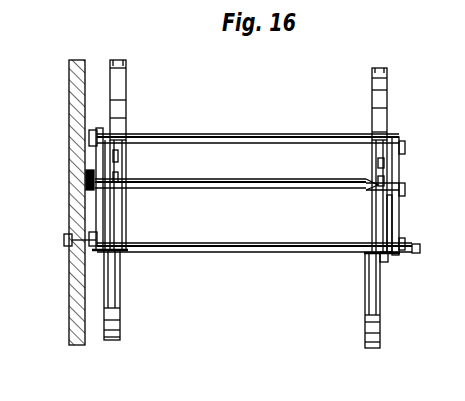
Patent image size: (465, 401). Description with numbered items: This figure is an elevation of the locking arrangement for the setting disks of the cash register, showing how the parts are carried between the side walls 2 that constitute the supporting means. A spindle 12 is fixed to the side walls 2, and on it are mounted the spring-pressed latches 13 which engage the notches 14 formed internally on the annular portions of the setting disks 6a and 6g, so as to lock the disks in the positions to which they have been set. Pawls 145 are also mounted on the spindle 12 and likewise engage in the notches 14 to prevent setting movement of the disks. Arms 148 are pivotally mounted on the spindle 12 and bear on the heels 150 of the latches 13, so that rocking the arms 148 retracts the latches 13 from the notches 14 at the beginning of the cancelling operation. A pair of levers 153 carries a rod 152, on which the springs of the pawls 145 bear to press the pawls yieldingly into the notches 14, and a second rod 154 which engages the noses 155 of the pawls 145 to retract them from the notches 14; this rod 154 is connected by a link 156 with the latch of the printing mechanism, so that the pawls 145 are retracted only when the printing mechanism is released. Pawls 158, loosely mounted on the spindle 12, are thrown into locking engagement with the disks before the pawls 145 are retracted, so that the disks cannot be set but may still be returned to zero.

The side wall 2 is at (70, 277).
The setting disk 6g is at (117, 59).
The setting disk 6a is at (383, 67).
The notch 14 is at (126, 78).
The spindle 12 is at (249, 253).
The spring-pressed latch 13 is at (118, 294).
The pawl 145 is at (119, 223).
The arm 148 is at (97, 222).
The heel 150 is at (395, 228).
The rod 152 is at (236, 134).
The lever 153 is at (96, 152).
The rod 154 is at (233, 179).
The nose 155 is at (364, 192).
The link 156 is at (88, 186).
The pawl 158 is at (120, 164).